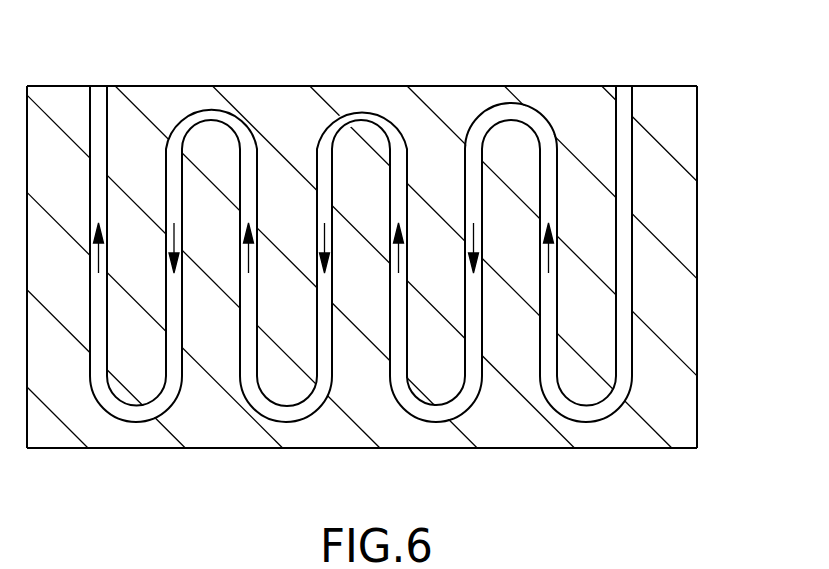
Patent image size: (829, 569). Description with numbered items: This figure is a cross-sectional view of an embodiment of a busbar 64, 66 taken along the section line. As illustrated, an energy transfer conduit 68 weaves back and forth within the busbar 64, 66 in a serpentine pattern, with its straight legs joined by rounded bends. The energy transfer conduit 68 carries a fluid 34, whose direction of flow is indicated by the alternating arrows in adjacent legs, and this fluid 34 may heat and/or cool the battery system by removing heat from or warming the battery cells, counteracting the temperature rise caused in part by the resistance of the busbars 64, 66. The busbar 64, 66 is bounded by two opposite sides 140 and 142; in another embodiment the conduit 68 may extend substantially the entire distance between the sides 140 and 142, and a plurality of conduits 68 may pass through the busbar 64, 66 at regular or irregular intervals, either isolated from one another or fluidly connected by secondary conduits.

The fluid 34 is at (248, 258).
The busbar 64 is at (409, 267).
The busbar 66 is at (712, 289).
The energy transfer conduit 68 is at (167, 147).
The side of the busbar 140 is at (317, 448).
The side of the busbar 142 is at (362, 86).